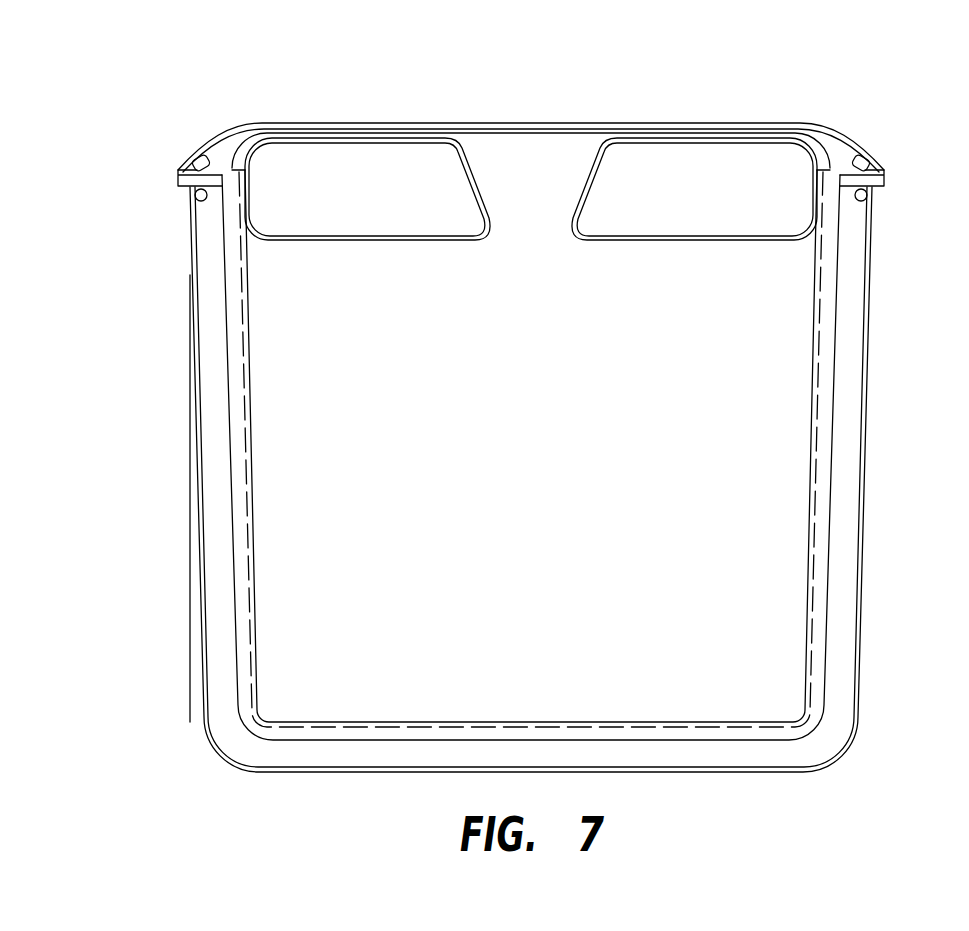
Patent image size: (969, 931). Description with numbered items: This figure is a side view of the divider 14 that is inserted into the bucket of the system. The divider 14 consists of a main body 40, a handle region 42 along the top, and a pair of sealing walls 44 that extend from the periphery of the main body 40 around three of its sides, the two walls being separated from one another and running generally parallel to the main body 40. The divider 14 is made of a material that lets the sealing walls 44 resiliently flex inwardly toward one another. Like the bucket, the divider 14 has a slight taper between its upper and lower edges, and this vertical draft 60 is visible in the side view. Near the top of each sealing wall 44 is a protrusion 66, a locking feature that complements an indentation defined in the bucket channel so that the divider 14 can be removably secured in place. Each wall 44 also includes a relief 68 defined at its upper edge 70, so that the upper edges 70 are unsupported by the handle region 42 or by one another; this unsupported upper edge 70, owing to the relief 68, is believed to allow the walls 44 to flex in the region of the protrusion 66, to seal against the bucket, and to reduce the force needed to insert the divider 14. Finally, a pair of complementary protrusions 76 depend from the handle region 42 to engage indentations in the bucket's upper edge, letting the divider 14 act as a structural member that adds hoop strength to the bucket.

The divider 14 is at (757, 85).
The main body 40 is at (747, 497).
The handle region 42 is at (532, 122).
The sealing walls 44 is at (847, 602).
The vertical draft 60 is at (245, 713).
The protrusion 66 is at (195, 197).
The relief 68 is at (193, 181).
The upper edge 70 is at (858, 178).
The protrusion 76 is at (198, 157).